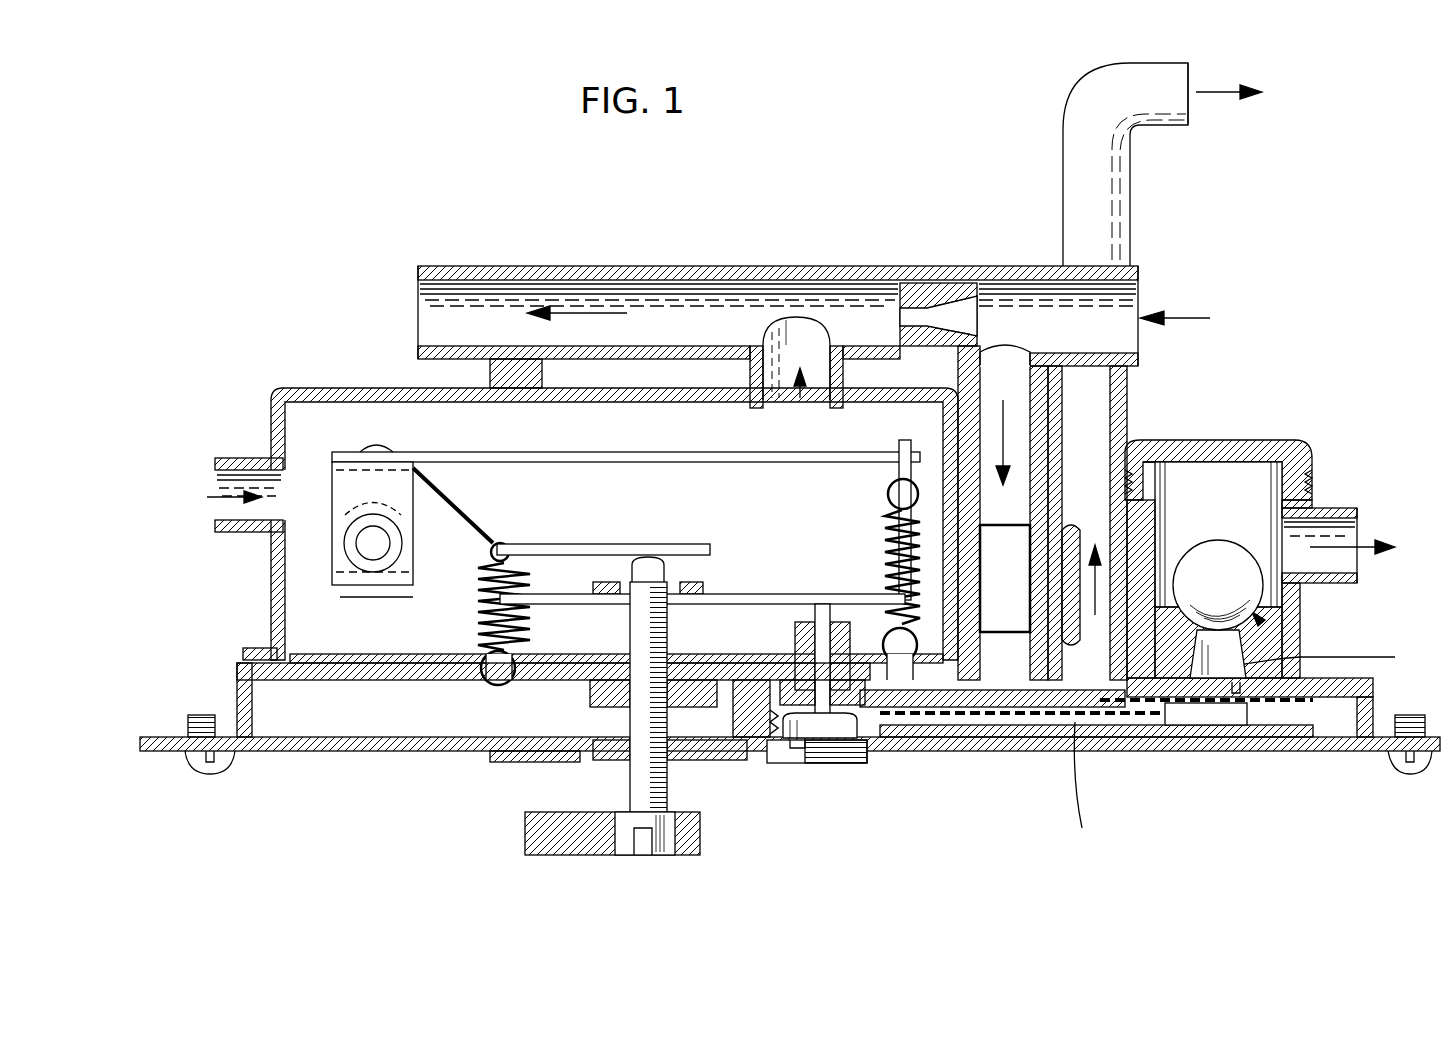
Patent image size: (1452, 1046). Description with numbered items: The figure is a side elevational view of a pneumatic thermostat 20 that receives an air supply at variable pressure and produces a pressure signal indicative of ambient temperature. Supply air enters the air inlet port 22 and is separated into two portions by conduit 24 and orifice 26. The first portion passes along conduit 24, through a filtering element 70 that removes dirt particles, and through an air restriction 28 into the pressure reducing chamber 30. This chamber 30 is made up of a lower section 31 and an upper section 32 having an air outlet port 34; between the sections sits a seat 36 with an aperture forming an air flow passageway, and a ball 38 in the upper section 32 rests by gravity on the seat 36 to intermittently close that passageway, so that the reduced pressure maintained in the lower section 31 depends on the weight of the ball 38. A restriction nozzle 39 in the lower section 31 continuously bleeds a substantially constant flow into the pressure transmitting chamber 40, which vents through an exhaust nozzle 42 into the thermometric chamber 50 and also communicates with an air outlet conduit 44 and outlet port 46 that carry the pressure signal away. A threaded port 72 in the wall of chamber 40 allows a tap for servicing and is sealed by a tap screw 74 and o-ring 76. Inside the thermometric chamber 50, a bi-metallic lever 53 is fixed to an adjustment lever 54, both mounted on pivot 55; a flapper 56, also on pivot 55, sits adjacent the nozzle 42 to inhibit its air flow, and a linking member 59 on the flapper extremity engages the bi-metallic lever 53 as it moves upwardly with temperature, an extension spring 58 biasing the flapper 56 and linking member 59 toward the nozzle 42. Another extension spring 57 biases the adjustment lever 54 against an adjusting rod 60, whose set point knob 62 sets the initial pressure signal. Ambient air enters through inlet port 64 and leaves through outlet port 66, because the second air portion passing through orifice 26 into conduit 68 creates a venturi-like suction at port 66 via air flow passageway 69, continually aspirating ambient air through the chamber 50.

The pneumatic thermostat 20 is at (330, 278).
The air inlet port 22 is at (1140, 290).
The conduit 24 is at (1032, 405).
The orifice 26 is at (945, 296).
The air restriction 28 is at (1000, 707).
The pressure reducing chamber 30 is at (1300, 622).
The lower section 31 is at (1245, 668).
The upper section 32 is at (1258, 490).
The air outlet port 34 is at (1365, 515).
The seat 36 is at (1183, 632).
The ball 38 is at (1213, 548).
The restriction nozzle 39 is at (1235, 705).
The pressure transmitting chamber 40 is at (1192, 720).
The exhaust nozzle 42 is at (820, 602).
The air outlet conduit 44 is at (1078, 177).
The outlet port 46 is at (1192, 112).
The thermometric chamber 50 is at (323, 387).
The bi-metallic lever 53 is at (575, 452).
The adjustment lever 54 is at (630, 544).
The pivot 55 is at (365, 546).
The flapper 56 is at (765, 596).
The extension spring 57 is at (480, 625).
The extension spring 58 is at (882, 548).
The linking member 59 is at (884, 492).
The adjusting rod 60 is at (640, 770).
The set point knob 62 is at (565, 845).
The ambient air inlet port 64 is at (243, 458).
The outlet port 66 is at (808, 406).
The conduit 68 is at (661, 264).
The air flow passageway 69 is at (805, 335).
The filtering element 70 is at (1016, 583).
The threaded port 72 is at (752, 728).
The tap screw 74 is at (800, 762).
The o-ring 76 is at (832, 762).